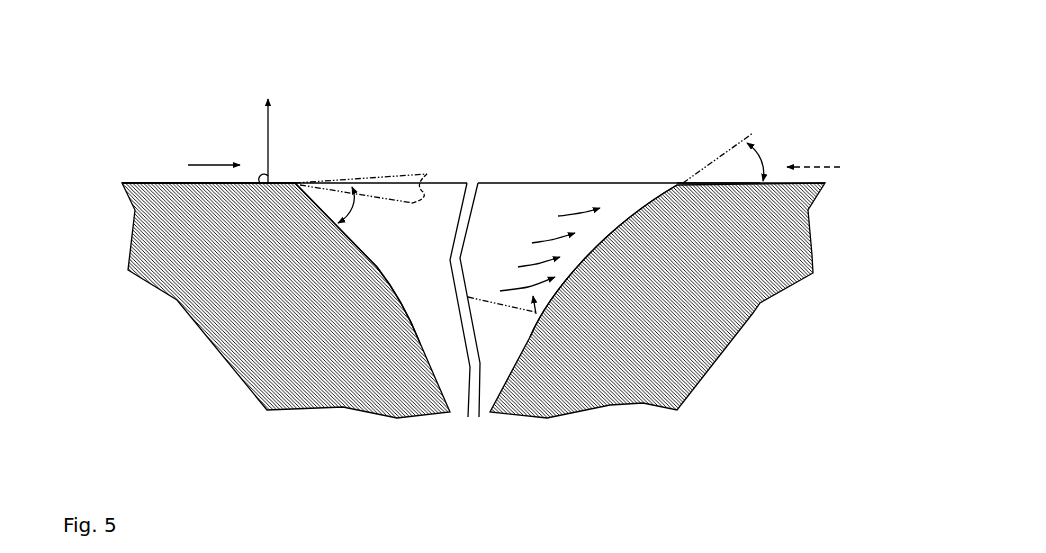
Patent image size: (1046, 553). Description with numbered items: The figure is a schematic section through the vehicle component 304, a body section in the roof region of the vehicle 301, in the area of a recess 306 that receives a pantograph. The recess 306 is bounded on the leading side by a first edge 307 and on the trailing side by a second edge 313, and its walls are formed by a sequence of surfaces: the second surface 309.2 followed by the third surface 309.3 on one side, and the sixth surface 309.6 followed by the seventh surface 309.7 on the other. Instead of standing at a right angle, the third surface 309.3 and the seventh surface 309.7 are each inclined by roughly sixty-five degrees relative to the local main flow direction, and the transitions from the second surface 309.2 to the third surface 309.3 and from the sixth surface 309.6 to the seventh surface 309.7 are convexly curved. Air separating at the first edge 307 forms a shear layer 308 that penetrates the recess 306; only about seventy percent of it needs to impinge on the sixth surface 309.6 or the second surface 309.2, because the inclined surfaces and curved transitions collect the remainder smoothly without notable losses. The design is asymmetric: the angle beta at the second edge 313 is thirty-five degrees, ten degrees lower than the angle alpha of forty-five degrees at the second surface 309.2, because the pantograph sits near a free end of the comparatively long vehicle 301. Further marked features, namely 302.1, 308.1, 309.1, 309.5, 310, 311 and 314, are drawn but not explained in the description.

The vehicle 301 is at (802, 60).
The nozzle top surface 302.1 is at (778, 183).
The vehicle component 304 is at (512, 422).
The recess 306 is at (447, 303).
The first edge 307 is at (295, 190).
The shear layer 308 is at (337, 177).
The flow path in right body 308.1 is at (545, 333).
The left top surface 309.1 is at (160, 178).
The second surface 309.2 is at (317, 203).
The third surface 309.3 is at (408, 317).
The right top surface 309.5 is at (717, 183).
The sixth surface 309.6 is at (630, 218).
The seventh surface 309.7 is at (528, 327).
The vertical axis 310 is at (265, 133).
The horizontal flow direction 311 is at (210, 160).
The second edge 313 is at (683, 182).
The incoming flow direction 314 is at (807, 160).